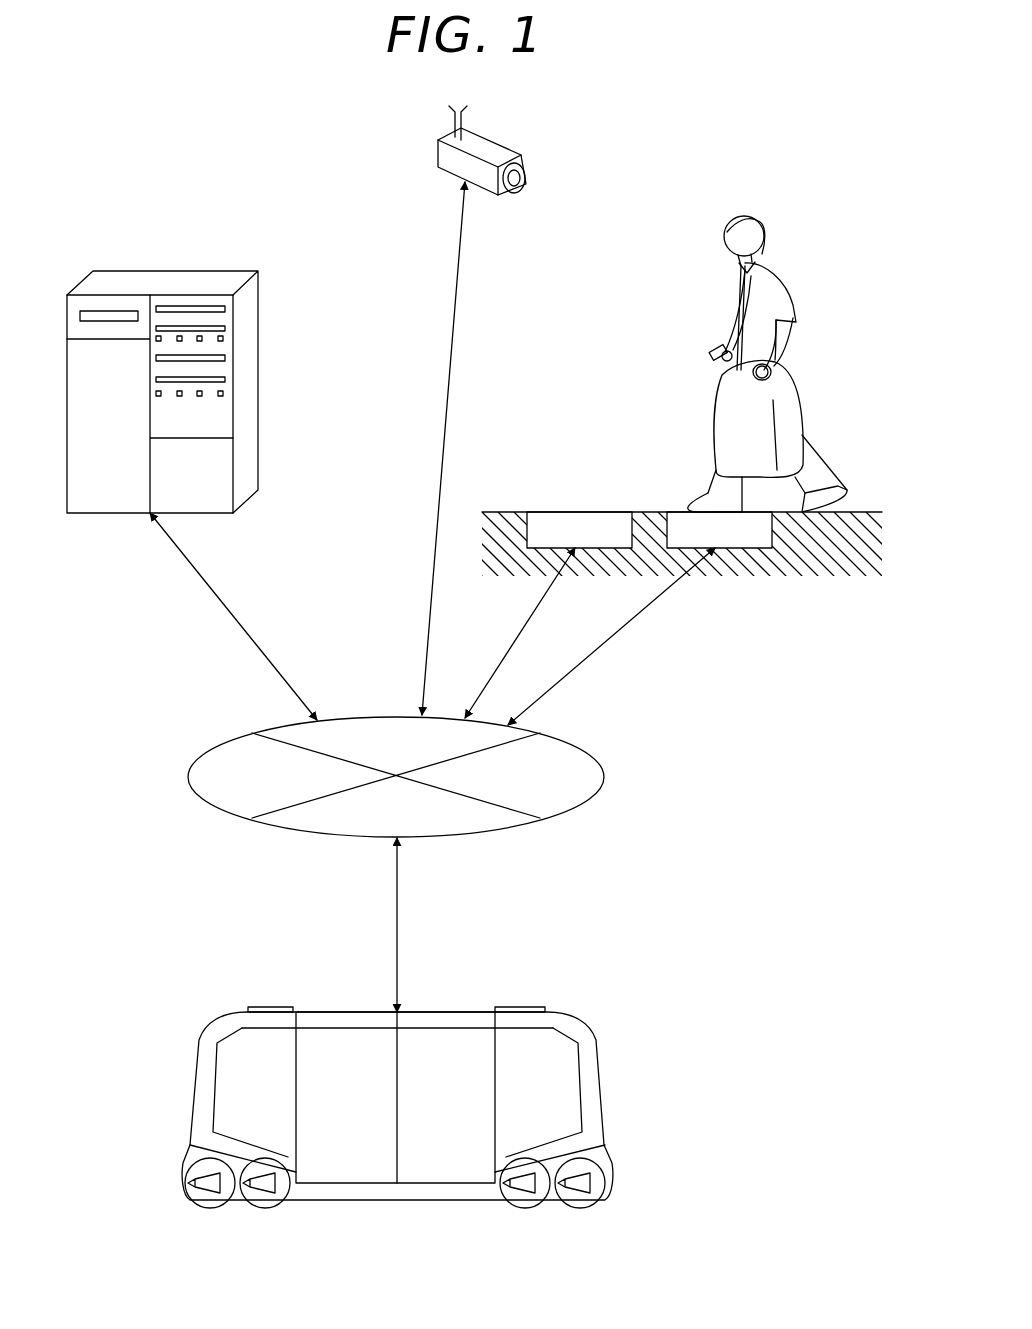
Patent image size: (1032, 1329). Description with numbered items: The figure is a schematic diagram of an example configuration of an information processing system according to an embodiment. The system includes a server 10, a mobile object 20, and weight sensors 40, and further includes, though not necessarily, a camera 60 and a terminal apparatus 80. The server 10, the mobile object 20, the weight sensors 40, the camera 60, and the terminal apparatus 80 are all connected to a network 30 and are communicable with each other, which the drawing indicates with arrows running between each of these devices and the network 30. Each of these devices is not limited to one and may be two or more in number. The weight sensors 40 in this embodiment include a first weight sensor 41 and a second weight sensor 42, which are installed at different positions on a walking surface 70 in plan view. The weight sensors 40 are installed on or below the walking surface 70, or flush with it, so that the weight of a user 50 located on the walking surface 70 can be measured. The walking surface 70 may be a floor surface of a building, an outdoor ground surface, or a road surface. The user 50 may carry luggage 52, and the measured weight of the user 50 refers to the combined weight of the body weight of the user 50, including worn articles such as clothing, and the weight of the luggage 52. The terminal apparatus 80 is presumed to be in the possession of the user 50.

The server 10 is at (148, 270).
The mobile object 20 is at (336, 1012).
The network 30 is at (590, 752).
The weight sensors 40 is at (670, 538).
The first weight sensor 41 is at (737, 530).
The second weight sensor 42 is at (578, 528).
The user 50 is at (787, 268).
The luggage 52 is at (800, 400).
The camera 60 is at (438, 151).
The walking surface 70 is at (492, 512).
The terminal apparatus 80 is at (713, 347).